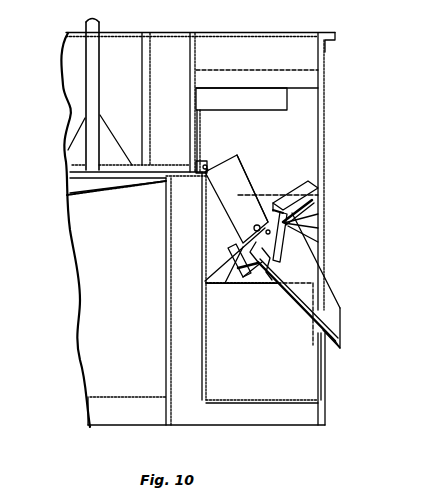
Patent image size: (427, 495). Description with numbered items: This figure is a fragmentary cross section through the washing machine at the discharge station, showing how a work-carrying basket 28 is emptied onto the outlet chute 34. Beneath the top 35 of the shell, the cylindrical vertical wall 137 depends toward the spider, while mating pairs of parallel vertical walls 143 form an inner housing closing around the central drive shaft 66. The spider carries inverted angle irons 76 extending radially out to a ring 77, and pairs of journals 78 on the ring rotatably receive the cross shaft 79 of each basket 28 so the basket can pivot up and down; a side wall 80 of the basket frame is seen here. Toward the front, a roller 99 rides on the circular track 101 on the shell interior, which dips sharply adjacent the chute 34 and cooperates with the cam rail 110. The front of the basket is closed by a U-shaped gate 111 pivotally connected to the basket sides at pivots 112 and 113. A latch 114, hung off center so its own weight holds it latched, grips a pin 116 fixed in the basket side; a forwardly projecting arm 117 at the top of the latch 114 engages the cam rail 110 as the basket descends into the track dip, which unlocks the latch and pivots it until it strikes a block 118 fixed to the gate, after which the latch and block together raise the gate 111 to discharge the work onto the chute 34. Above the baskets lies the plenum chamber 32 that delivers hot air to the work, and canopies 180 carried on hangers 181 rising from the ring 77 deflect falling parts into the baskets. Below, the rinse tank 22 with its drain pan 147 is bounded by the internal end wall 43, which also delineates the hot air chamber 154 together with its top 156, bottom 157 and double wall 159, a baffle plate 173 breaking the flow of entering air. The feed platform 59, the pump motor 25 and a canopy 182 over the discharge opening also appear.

The tank 22 is at (94, 303).
The motor 25 is at (117, 184).
The work-carrying basket 28 is at (248, 172).
The plenum chamber 32 is at (272, 393).
The chute 34 is at (318, 280).
The top 35 is at (246, 33).
The end wall 43 is at (166, 353).
The platform 59 is at (124, 396).
The shaft 66 is at (100, 22).
The inverted angle iron 76 is at (183, 173).
The ring 77 is at (207, 167).
The journal 78 is at (208, 170).
The cross shaft 79 is at (209, 168).
The side wall 80 is at (236, 199).
The roller 99 is at (266, 283).
The circular track 101 is at (226, 284).
The cam rail 110 is at (320, 228).
The gate 111 is at (283, 242).
The pivotal connection 112 is at (256, 227).
The pivotal connection 113 is at (275, 263).
The latch 114 is at (282, 206).
The pin 116 is at (252, 243).
The arm 117 is at (317, 212).
The block 118 is at (320, 237).
The cylindrical vertical wall 137 is at (196, 50).
The parallel vertical wall 143 is at (146, 68).
The drain pan 147 is at (88, 196).
The hot air chamber 154 is at (283, 376).
The top 156 is at (272, 290).
The bottom 157 is at (240, 393).
The double wall 159 is at (279, 355).
The baffle plate 173 is at (206, 344).
The canopy 180 is at (241, 99).
The hanger 181 is at (200, 124).
The canopy 182 is at (327, 358).